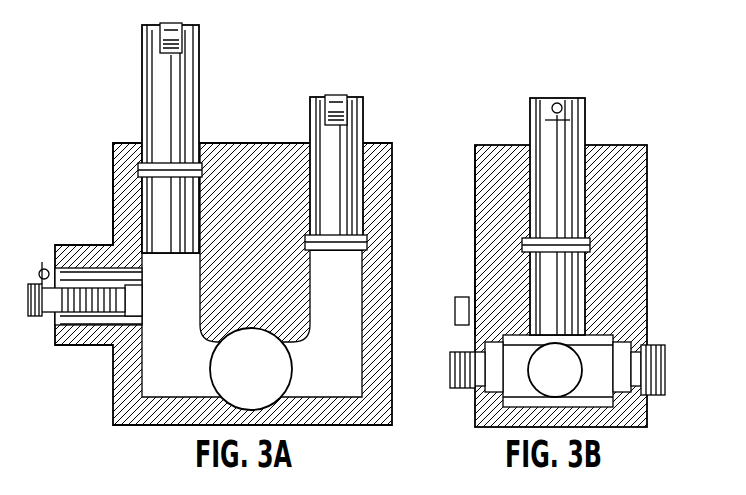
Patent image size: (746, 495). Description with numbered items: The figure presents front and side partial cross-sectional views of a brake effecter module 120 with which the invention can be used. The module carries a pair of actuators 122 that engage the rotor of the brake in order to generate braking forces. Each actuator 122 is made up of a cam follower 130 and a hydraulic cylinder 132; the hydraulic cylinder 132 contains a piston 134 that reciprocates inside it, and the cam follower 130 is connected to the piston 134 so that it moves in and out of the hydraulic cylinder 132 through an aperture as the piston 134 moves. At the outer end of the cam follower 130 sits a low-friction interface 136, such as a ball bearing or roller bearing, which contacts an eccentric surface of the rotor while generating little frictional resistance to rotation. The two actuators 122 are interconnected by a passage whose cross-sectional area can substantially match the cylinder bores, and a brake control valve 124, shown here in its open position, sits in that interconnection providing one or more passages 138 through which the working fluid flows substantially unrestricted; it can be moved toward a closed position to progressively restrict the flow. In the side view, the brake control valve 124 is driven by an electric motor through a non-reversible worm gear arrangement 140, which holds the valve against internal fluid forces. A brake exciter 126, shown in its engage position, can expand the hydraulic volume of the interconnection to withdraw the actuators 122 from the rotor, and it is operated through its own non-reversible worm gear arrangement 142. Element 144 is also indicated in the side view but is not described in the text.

In FIG. 3A, the brake effecter module 120 is at (272, 78).
In FIG. 3B, the brake effecter module 120 is at (603, 82).
In FIG. 3A, the actuator 122 is at (197, 100).
In FIG. 3B, the actuator 122 is at (588, 118).
In FIG. 3A, the brake control valve 124 is at (297, 383).
In FIG. 3B, the brake control valve 124 is at (612, 405).
In FIG. 3A, the brake exciter 126 is at (110, 348).
In FIG. 3A, the cam follower 130 is at (152, 100).
In FIG. 3B, the cam follower 130 is at (532, 135).
In FIG. 3A, the hydraulic cylinder 132 is at (145, 222).
In FIG. 3B, the hydraulic cylinder 132 is at (520, 218).
In FIG. 3A, the piston 134 is at (143, 185).
In FIG. 3B, the piston 134 is at (556, 245).
In FIG. 3A, the low-friction interface 136 is at (175, 25).
In FIG. 3B, the low-friction interface 136 is at (555, 95).
In FIG. 3A, the passage 138 is at (251, 369).
In FIG. 3B, the passage 138 is at (555, 370).
In FIG. 3B, the worm gear arrangement 140 is at (655, 400).
In FIG. 3A, the worm gear arrangement 142 is at (50, 320).
In FIG. 3B, the sensor 144 is at (455, 320).